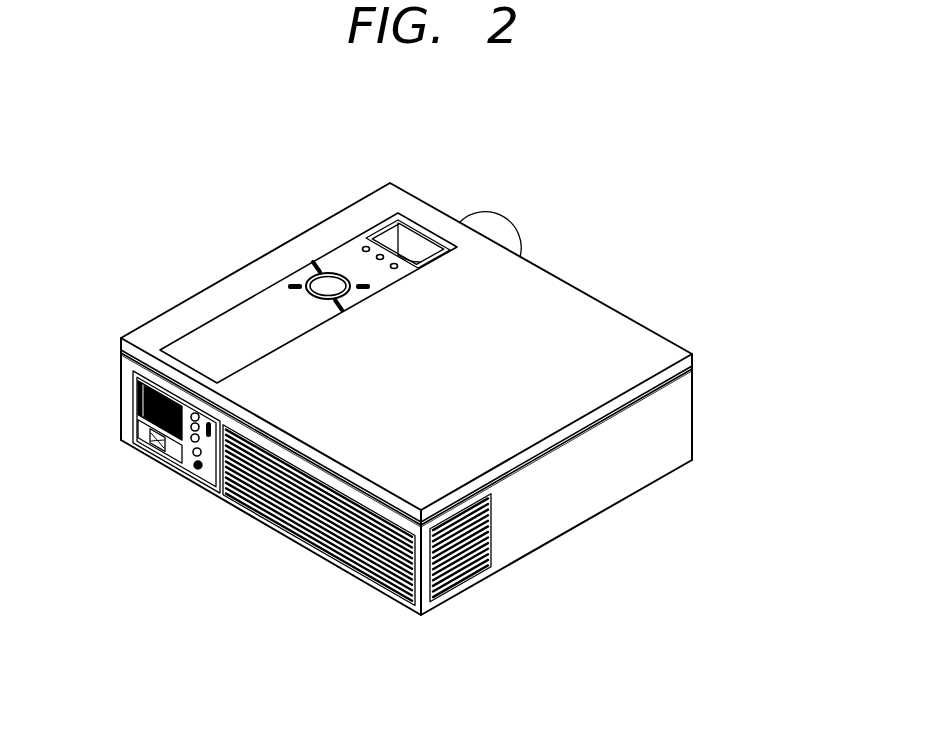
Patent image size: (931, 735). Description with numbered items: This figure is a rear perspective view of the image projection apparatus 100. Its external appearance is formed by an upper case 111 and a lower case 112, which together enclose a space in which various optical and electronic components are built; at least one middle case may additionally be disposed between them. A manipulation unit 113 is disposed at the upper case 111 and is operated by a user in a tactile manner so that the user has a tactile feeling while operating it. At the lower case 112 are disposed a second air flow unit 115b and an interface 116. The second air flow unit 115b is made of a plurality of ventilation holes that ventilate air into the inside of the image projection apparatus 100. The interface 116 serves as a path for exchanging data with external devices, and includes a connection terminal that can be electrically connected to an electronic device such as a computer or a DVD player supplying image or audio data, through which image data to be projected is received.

The image projection apparatus 100 is at (601, 285).
The upper case 111 is at (690, 362).
The lower case 112 is at (690, 410).
The manipulation unit 113 is at (348, 264).
The second air flow unit 115b is at (323, 542).
The interface 116 is at (190, 455).